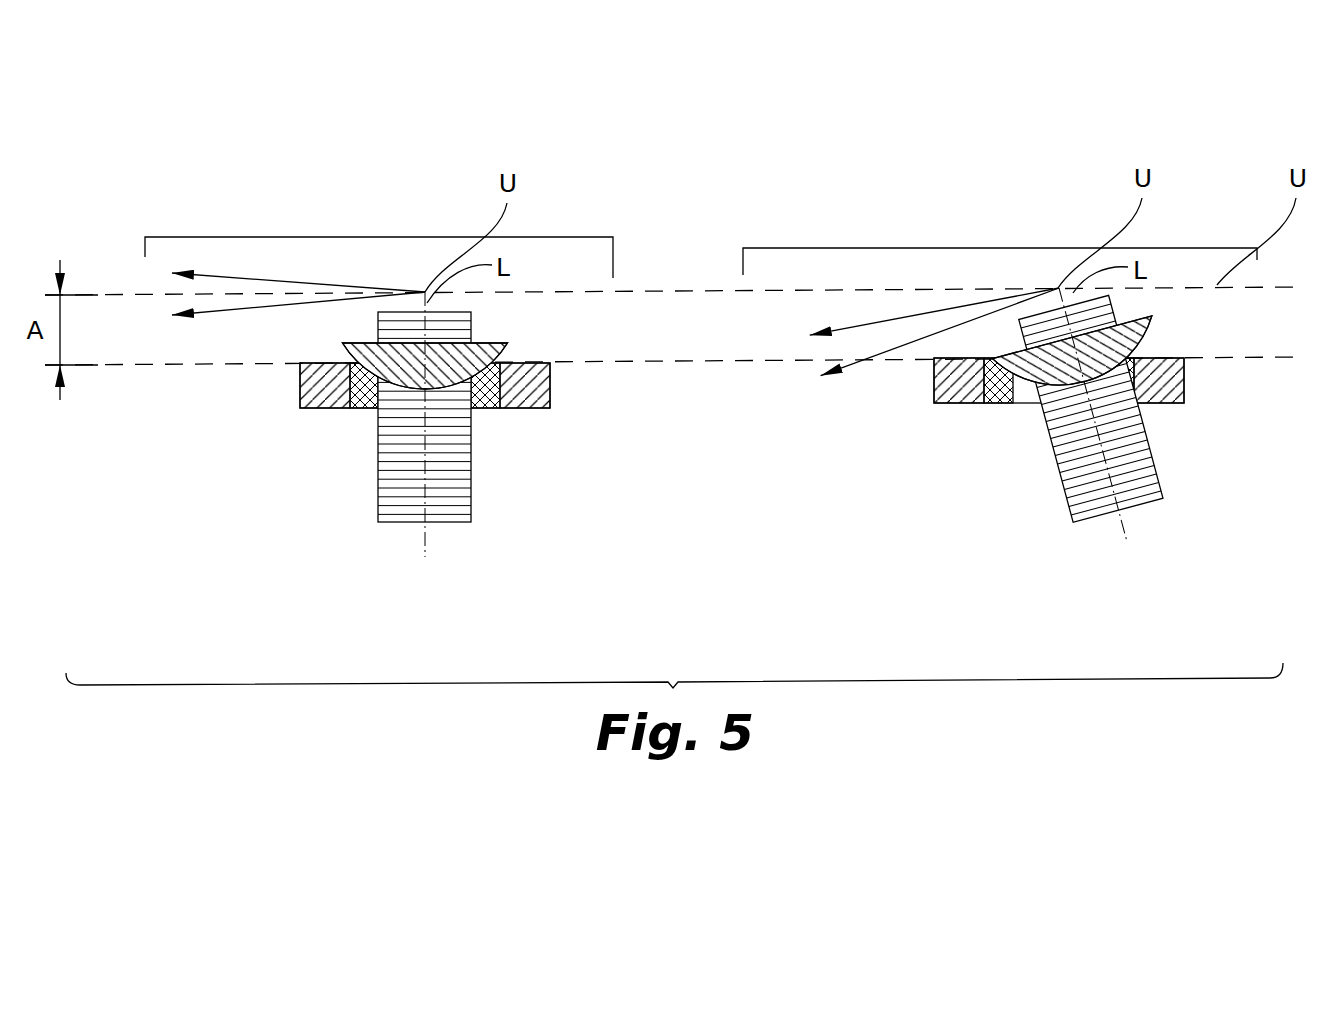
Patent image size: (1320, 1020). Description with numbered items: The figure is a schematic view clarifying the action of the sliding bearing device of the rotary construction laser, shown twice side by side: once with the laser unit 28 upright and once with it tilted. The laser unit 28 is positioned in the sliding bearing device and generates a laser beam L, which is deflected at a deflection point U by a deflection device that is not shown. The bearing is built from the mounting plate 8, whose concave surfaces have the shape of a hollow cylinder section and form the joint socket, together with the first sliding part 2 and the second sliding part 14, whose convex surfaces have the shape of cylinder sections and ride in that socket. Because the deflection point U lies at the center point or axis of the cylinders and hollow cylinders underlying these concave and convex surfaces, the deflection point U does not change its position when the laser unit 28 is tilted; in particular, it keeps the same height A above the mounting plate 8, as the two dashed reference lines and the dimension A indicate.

The first sliding part 2 is at (362, 403).
The mounting plate 8 is at (547, 387).
The second sliding part 14 is at (482, 348).
The laser unit 28 is at (443, 512).